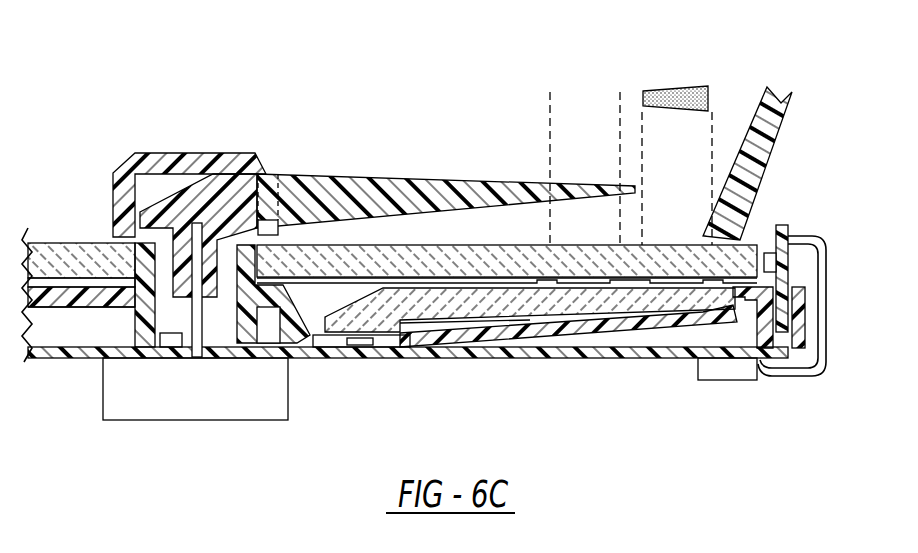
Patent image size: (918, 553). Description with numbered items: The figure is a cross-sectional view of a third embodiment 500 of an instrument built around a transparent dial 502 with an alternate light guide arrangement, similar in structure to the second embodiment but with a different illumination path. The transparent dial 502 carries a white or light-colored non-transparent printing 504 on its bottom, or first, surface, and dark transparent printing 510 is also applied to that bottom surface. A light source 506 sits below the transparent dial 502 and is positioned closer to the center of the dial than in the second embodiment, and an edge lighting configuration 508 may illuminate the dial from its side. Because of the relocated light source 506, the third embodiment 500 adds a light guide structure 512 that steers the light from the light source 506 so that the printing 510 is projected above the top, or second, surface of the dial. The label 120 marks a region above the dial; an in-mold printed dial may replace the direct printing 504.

The third embodiment 500 is at (155, 100).
The transparent dial 502 is at (400, 262).
The white or light-colored non-transparent printing 504 is at (482, 280).
The light source 506 is at (360, 358).
The edge lighting configuration 508 is at (800, 240).
The dark transparent printing 510 is at (630, 289).
The light guide structure 512 is at (443, 304).
The light beam 120 is at (631, 165).